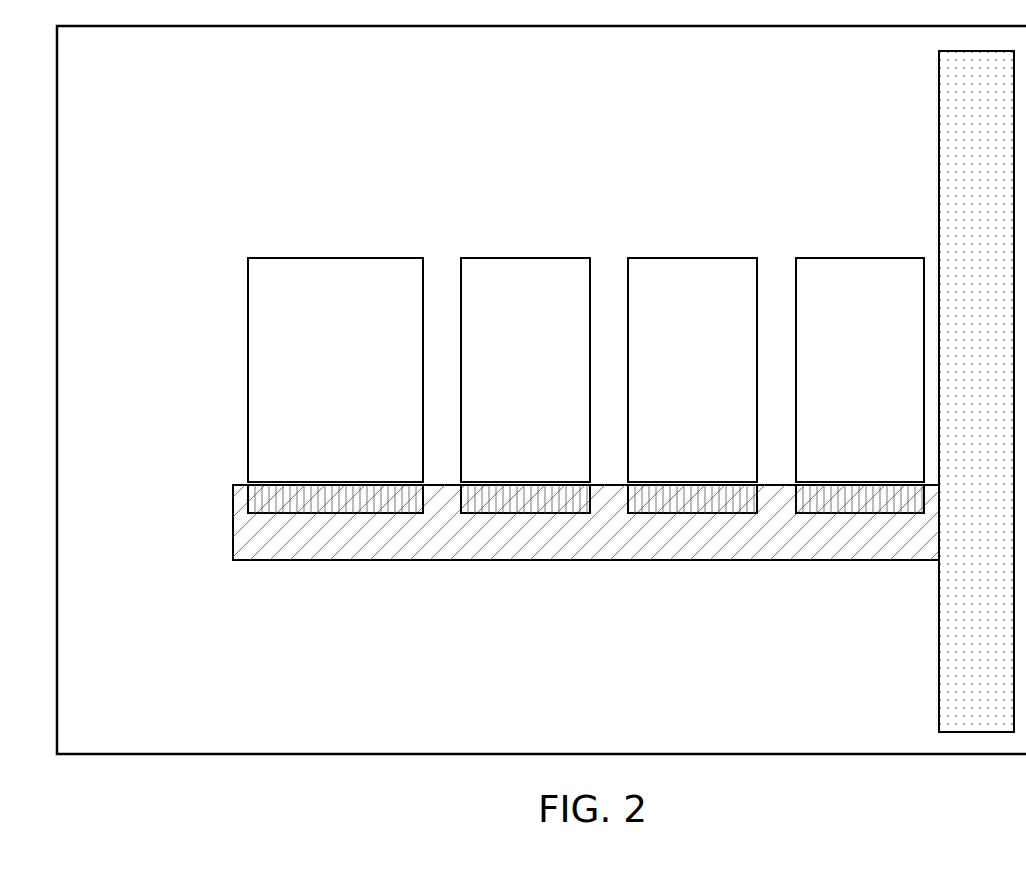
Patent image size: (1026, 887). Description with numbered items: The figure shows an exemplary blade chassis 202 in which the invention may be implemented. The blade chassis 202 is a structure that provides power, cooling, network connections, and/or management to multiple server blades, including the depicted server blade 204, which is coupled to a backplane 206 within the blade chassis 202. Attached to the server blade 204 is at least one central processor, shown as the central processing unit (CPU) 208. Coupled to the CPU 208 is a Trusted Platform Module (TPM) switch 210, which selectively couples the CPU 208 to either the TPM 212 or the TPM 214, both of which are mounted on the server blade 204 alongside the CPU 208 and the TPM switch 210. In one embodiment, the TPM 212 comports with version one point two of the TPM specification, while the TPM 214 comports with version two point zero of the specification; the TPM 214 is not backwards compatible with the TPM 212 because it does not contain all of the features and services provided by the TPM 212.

The blade chassis 202 is at (190, 106).
The server blade 204 is at (316, 572).
The backplane 206 is at (912, 115).
The central processing unit 208 is at (331, 267).
The Trusted Platform Module switch 210 is at (521, 267).
The Trusted Platform Module 212 is at (691, 267).
The Trusted Platform Module 214 is at (860, 267).